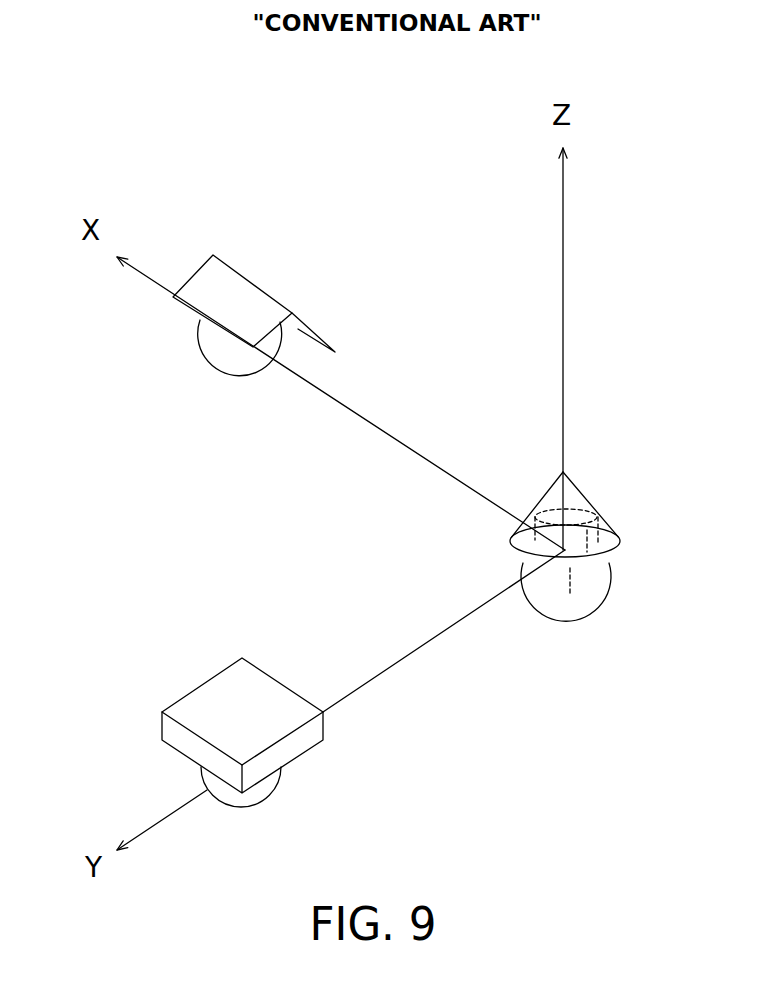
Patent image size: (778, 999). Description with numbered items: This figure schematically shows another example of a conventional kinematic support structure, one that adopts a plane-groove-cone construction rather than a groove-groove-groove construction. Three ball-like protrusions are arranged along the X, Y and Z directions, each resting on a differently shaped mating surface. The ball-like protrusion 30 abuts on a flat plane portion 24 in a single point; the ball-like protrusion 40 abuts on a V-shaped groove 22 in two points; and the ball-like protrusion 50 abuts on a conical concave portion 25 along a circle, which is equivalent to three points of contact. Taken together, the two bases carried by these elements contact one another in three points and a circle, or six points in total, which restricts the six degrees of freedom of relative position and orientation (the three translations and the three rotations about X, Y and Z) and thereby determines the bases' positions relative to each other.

The V-shaped groove 22 is at (332, 348).
The plane portion 24 is at (297, 755).
The conical concave portion 25 is at (593, 562).
The ball-like protrusion 30 is at (265, 787).
The ball-like protrusion 40 is at (232, 362).
The ball-like protrusion 50 is at (573, 597).